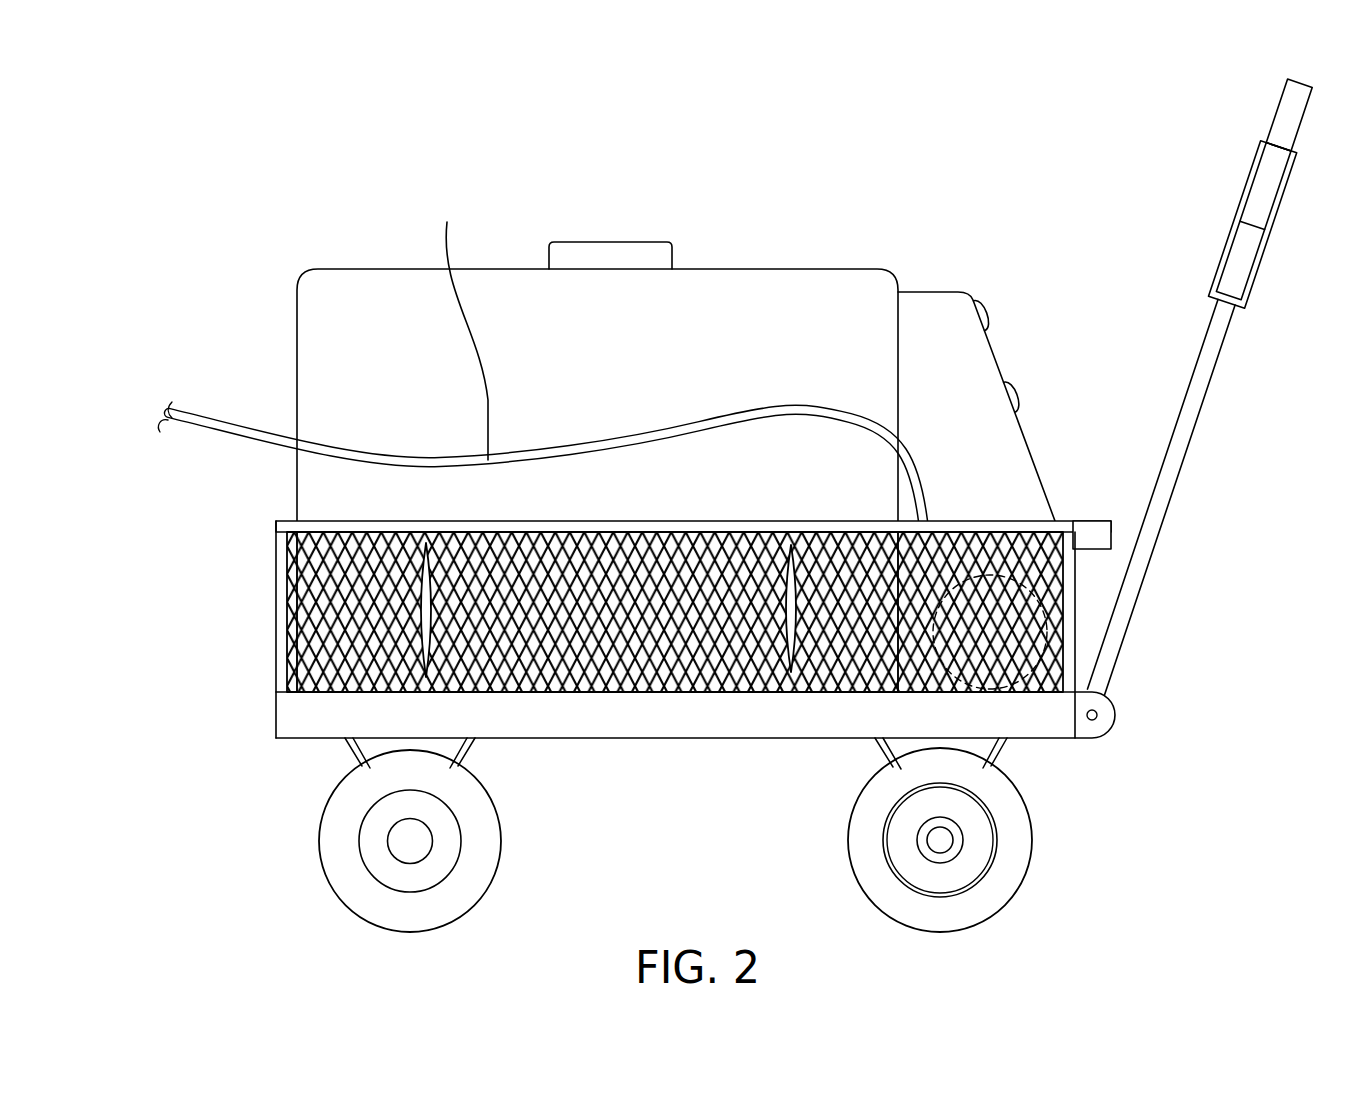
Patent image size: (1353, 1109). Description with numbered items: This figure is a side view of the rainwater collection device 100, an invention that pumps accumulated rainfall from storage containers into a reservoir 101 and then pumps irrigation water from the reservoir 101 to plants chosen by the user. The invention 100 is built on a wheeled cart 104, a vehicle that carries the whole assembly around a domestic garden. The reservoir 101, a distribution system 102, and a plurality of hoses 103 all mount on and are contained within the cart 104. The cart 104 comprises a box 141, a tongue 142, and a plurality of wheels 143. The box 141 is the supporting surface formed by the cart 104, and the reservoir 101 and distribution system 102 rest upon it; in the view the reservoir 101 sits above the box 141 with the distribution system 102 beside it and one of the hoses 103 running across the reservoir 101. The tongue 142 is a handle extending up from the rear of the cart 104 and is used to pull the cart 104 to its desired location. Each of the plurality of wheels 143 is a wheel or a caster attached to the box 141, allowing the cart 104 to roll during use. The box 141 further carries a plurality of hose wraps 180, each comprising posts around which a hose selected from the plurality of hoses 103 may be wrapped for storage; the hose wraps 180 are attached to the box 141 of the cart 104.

The rainwater collection device 100 is at (200, 196).
The reservoir 101 is at (738, 268).
The distribution system 102 is at (1028, 450).
The plurality of hoses 103 is at (454, 322).
The cart 104 is at (195, 678).
The box 141 is at (276, 605).
The tongue 142 is at (1178, 455).
The plurality of wheels 143 is at (500, 842).
The plurality of hose wraps 180 is at (789, 603).